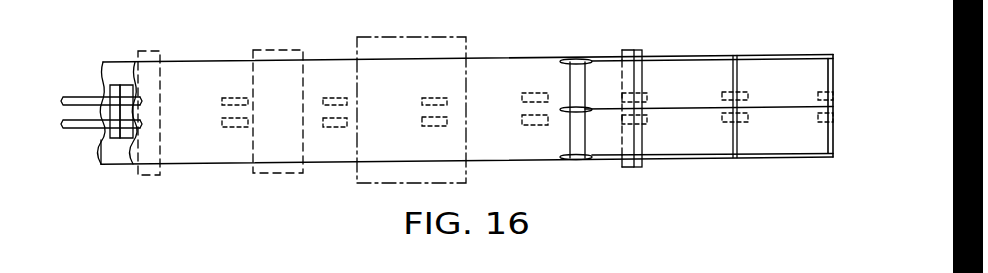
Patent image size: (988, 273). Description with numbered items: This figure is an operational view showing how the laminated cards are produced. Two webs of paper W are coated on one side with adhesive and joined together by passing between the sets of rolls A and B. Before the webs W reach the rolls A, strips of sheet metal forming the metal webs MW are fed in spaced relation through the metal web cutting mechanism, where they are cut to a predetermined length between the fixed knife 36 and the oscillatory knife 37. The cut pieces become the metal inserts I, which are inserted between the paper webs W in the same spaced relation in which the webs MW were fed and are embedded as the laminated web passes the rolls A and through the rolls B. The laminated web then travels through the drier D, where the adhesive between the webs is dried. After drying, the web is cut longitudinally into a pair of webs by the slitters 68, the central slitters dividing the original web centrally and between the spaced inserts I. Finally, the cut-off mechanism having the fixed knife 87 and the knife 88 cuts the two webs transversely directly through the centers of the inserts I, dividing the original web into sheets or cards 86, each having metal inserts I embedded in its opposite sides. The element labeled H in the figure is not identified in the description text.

The fixed knife 36 is at (128, 86).
The oscillatory knife 37 is at (113, 86).
The slitters 68 is at (563, 62).
The sheet or card 86 is at (768, 75).
The fixed knife 87 is at (630, 50).
The knife 88 is at (640, 49).
The rolls A is at (163, 52).
The rolls B is at (291, 50).
The drier D is at (390, 38).
The support bar H is at (575, 134).
The metal inserts I is at (219, 122).
The metal webs MW is at (82, 121).
The webs of paper W is at (150, 153).